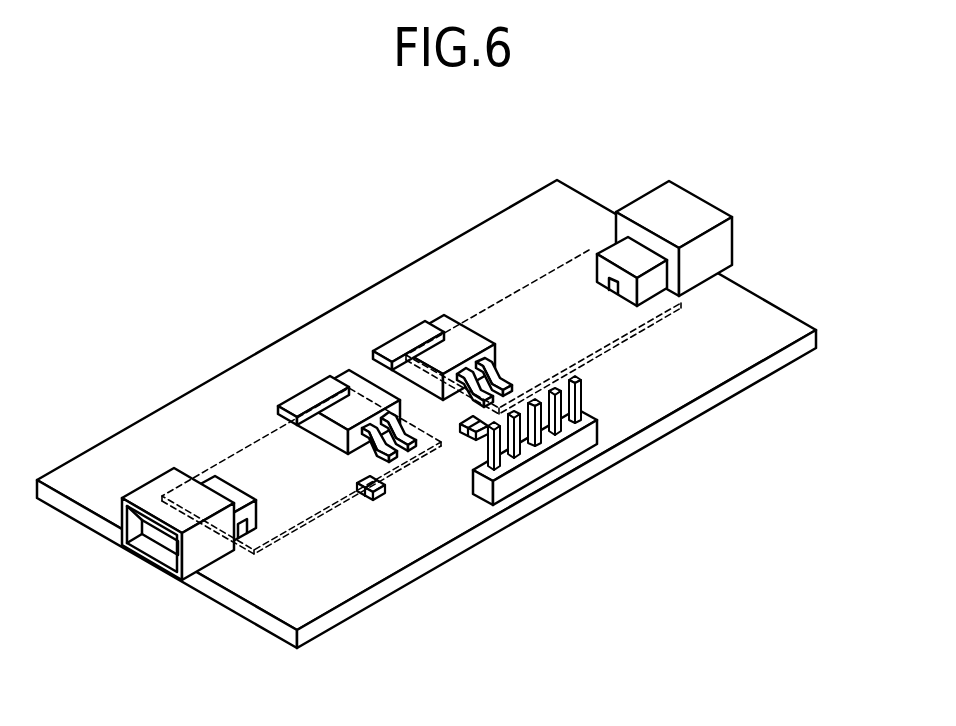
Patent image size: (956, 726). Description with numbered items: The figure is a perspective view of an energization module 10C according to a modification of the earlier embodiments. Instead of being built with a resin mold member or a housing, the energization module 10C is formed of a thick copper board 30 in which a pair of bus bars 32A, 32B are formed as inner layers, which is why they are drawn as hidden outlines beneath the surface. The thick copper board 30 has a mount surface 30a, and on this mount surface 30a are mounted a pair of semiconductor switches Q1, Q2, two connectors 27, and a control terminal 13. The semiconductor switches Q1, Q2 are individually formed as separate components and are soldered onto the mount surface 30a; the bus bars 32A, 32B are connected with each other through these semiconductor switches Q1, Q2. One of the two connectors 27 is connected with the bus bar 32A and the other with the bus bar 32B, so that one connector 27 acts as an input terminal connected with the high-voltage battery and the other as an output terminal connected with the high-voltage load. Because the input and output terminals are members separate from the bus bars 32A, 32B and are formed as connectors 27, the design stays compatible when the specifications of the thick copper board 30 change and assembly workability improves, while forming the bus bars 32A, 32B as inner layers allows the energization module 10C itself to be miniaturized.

The energization module 10C is at (435, 390).
The control terminal 13 is at (600, 402).
The connector 27 is at (145, 480).
The thick copper board 30 is at (435, 414).
The mount surface 30a is at (757, 313).
The bus bar 32A is at (257, 443).
The bus bar 32B is at (530, 283).
The semiconductor switch Q1 is at (325, 395).
The semiconductor switch Q2 is at (418, 340).